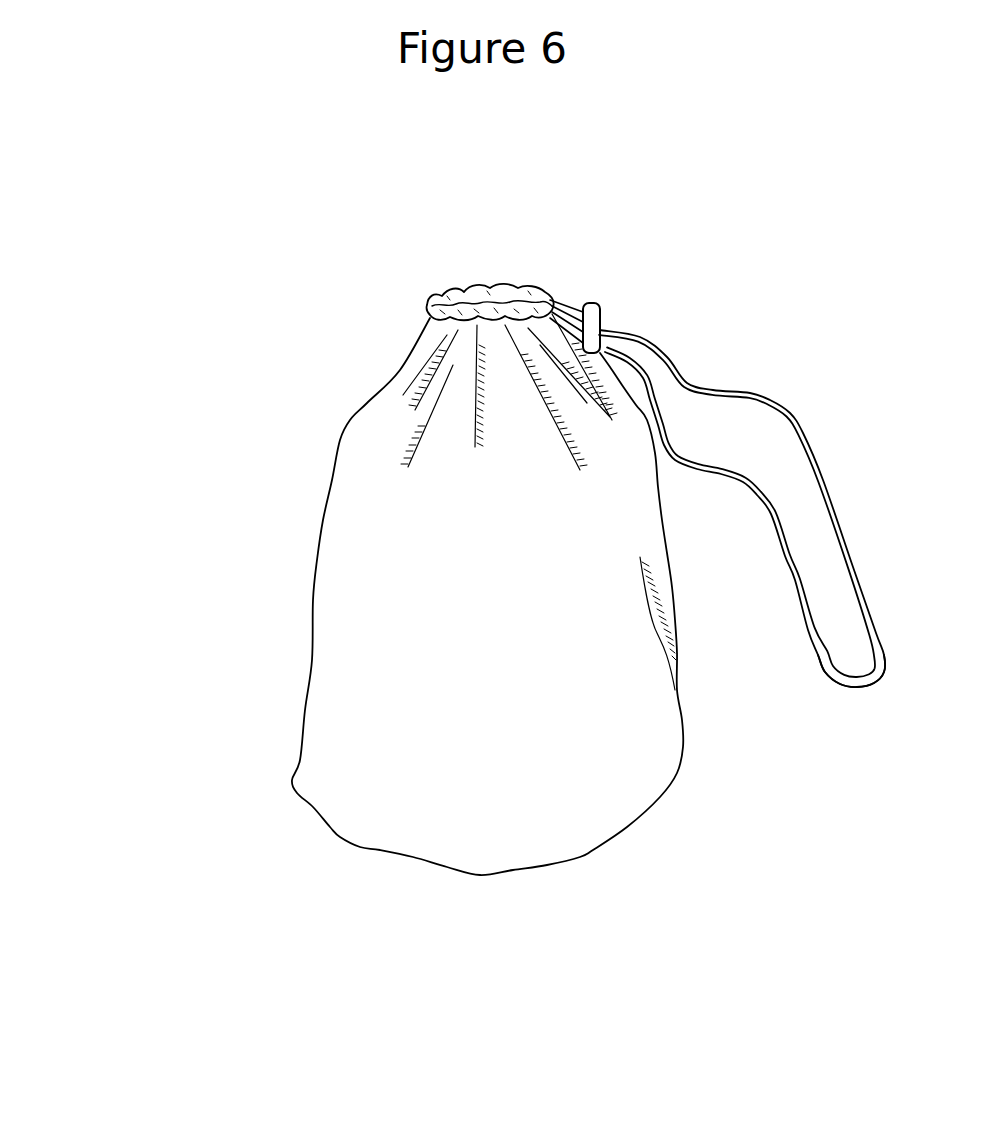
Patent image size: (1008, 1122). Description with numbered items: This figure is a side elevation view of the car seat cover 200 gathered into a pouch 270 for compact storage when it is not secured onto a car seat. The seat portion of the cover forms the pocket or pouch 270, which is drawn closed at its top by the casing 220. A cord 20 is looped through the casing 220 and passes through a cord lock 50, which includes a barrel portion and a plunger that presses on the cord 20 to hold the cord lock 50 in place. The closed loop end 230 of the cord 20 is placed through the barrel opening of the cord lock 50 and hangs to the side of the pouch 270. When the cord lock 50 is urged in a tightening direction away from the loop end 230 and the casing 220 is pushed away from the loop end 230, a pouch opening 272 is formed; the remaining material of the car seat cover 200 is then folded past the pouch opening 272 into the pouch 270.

The car seat cover 200 is at (174, 361).
The casing 220 is at (430, 304).
The pouch opening 272 is at (500, 290).
The cord lock 50 is at (600, 318).
The cord 20 is at (780, 405).
The pouch 270 is at (460, 632).
The loop end 230 is at (853, 689).